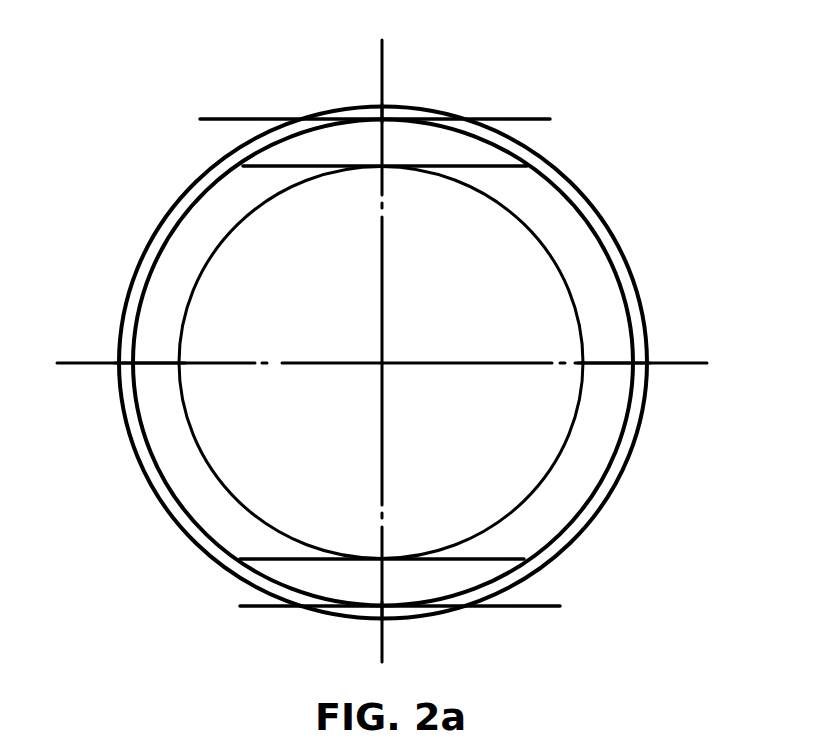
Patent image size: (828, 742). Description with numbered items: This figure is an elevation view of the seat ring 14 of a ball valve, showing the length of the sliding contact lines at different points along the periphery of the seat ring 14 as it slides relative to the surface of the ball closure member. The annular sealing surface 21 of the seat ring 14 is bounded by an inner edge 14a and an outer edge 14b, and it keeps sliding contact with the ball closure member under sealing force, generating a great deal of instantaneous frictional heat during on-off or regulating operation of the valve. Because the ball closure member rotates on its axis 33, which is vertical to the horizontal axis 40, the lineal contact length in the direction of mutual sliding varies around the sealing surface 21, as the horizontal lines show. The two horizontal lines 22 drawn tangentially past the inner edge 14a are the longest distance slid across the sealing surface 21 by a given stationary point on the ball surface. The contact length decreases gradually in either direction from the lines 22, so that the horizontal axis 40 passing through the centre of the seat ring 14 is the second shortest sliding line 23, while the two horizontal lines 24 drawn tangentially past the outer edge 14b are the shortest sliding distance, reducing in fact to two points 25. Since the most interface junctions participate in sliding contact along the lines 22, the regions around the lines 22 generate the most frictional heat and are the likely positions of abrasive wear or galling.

The seat ring 14 is at (428, 363).
The inner edge of sealing surface 14a is at (582, 320).
The outer edge of sealing surface 14b is at (611, 233).
The sealing surface 21 is at (181, 458).
The horizontal lines 22 is at (297, 165).
The second shortest sliding line 23 is at (157, 360).
The horizontal lines 24 is at (518, 117).
The points 25 is at (382, 108).
The axis 33 is at (378, 82).
The horizontal axis 40 is at (665, 366).